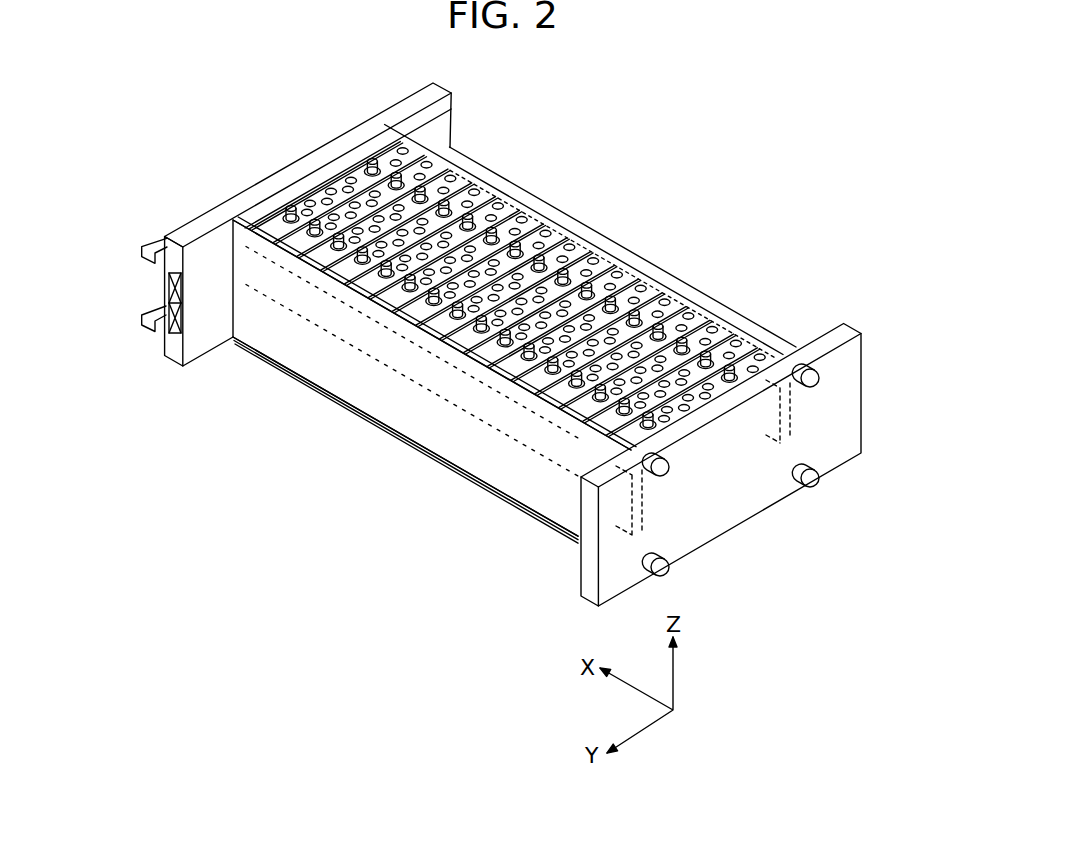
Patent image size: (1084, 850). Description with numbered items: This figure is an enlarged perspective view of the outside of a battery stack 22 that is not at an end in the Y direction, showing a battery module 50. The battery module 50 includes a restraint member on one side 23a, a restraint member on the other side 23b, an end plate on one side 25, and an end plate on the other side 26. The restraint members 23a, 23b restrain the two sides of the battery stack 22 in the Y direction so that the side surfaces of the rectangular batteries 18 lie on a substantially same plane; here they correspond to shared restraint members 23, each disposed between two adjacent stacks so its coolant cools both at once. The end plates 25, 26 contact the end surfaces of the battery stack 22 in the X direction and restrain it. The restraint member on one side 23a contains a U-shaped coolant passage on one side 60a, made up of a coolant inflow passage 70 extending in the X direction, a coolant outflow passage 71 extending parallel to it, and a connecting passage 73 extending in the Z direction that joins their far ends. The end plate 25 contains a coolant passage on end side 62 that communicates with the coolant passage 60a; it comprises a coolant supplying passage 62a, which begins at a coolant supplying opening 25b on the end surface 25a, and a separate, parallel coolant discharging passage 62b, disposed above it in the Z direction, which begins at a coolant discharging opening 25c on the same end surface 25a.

The rectangular battery 18 is at (620, 343).
The battery stack 22 is at (561, 260).
The shared restraint member 23 is at (305, 250).
The restraint member on one side 23a is at (420, 323).
The restraint member on the other side 23b is at (490, 182).
The end plate on one side 25 is at (296, 165).
The end surface 25a is at (162, 250).
The coolant supplying opening 25b is at (165, 332).
The coolant discharging opening 25c is at (170, 302).
The end plate on the other side 26 is at (738, 493).
The battery module 50 is at (652, 225).
The coolant passage on one side 60a is at (520, 455).
The coolant passage on end side 62 is at (172, 282).
The coolant supplying passage 62a is at (177, 340).
The coolant discharging passage 62b is at (168, 322).
The coolant inflow passage 70 is at (338, 352).
The coolant outflow passage 71 is at (467, 397).
The connecting passage 73 is at (627, 495).